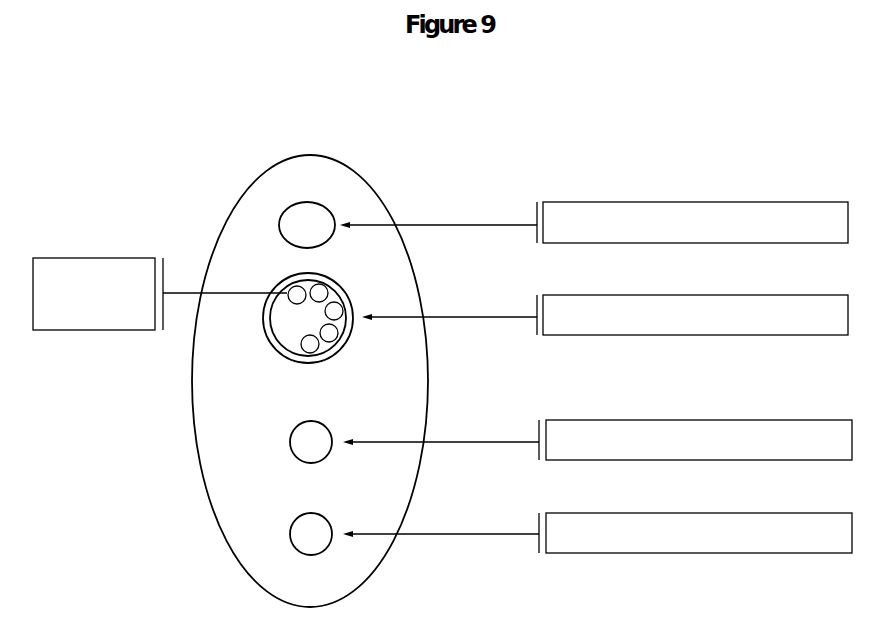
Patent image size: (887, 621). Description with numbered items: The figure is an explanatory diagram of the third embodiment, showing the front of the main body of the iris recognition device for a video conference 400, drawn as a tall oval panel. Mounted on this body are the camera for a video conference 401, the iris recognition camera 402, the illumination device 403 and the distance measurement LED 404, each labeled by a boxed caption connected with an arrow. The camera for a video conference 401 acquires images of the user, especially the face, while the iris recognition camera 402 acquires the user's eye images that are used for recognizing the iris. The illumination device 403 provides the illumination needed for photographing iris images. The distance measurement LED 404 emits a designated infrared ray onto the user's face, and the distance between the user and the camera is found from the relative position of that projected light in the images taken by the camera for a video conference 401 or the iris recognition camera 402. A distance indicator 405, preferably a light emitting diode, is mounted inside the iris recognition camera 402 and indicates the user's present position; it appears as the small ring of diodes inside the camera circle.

The iris recognition device for a video conference 400 is at (308, 155).
The camera for a video conference 401 is at (700, 202).
The iris recognition camera 402 is at (700, 295).
The illumination device 403 is at (703, 420).
The distance measurement LED 404 is at (703, 513).
The distance indicator 405 is at (108, 258).